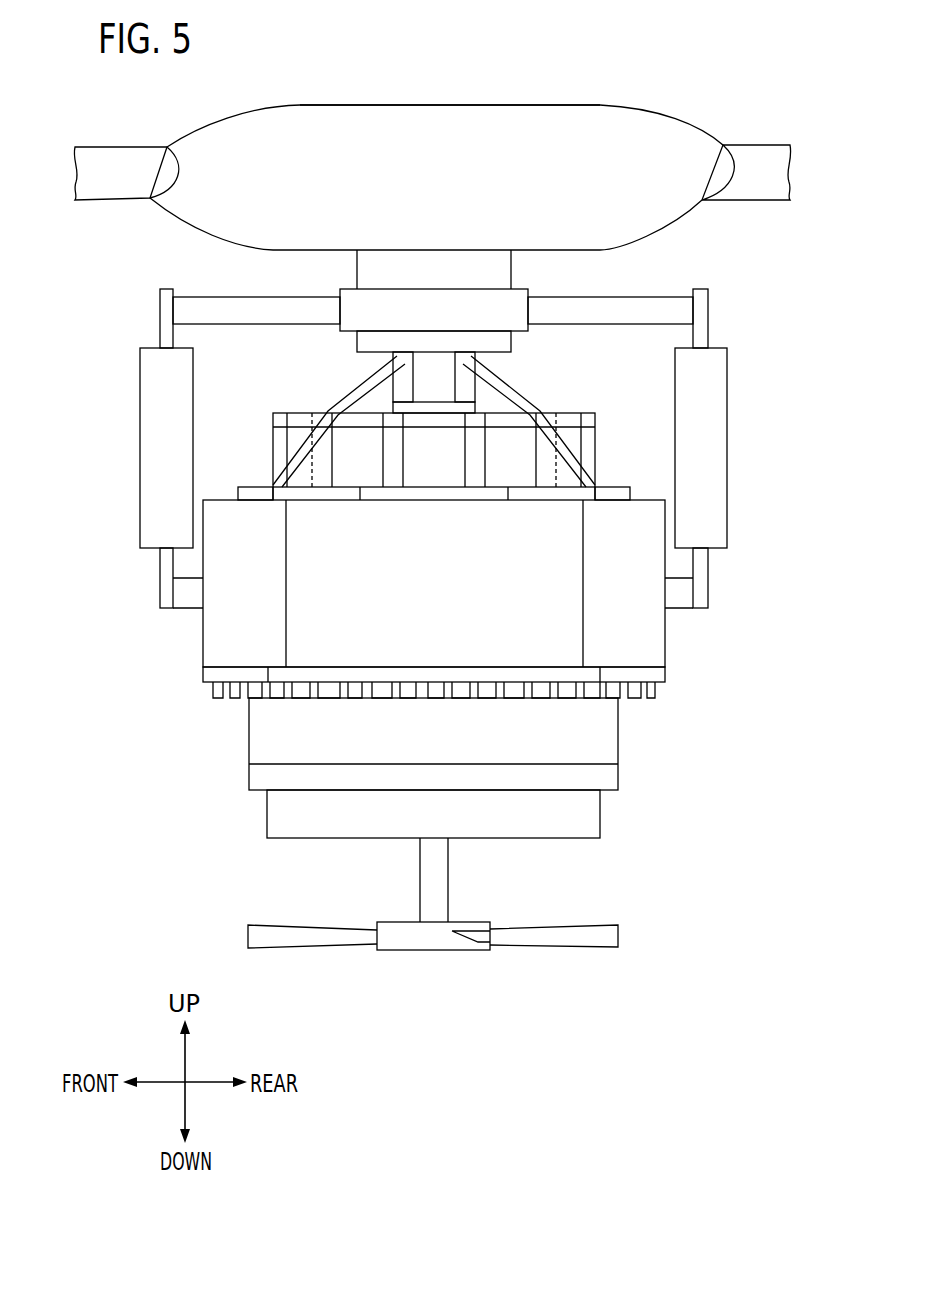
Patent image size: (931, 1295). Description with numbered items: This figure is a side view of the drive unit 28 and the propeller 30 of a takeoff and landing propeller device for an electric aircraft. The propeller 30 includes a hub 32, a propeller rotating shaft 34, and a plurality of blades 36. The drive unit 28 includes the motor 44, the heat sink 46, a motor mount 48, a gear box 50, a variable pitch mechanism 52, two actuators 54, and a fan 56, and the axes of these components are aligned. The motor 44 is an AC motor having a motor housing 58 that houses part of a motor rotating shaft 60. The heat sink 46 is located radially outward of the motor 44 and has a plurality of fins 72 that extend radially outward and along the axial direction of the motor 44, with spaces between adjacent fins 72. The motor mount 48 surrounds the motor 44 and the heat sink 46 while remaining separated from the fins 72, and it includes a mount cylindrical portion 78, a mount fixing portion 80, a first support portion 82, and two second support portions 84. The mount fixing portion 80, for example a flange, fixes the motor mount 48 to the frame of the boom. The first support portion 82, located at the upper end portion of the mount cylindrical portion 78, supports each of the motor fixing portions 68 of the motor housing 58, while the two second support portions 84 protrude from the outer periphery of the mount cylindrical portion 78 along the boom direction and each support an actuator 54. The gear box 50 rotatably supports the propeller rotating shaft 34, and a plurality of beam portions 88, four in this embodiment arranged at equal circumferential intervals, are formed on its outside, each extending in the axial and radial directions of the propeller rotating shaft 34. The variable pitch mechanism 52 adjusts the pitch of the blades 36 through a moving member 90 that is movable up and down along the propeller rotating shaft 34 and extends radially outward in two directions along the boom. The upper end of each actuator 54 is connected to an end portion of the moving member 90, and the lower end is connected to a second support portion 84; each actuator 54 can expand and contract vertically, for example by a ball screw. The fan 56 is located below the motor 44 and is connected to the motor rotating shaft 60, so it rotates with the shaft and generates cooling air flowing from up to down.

The drive unit 28 is at (128, 272).
The propeller 30 is at (548, 80).
The hub 32 is at (425, 100).
The propeller rotating shaft 34 is at (481, 265).
The blades 36 is at (112, 160).
The motor 44 is at (612, 822).
The heat sink 46 is at (632, 705).
The motor mount 48 is at (675, 645).
The gear box 50 is at (525, 383).
The variable pitch mechanism 52 is at (545, 284).
The actuators 54 is at (160, 406).
The fan 56 is at (478, 964).
The motor housing 58 is at (265, 813).
The motor rotating shaft 60 is at (440, 880).
The motor fixing portions 68 is at (255, 487).
The fins 72 is at (657, 700).
The mount cylindrical portion 78 is at (635, 640).
The mount fixing portion 80 is at (203, 675).
The first support portion 82 is at (232, 500).
The second support portions 84 is at (183, 610).
The beam portions 88 is at (368, 400).
The moving member 90 is at (342, 290).